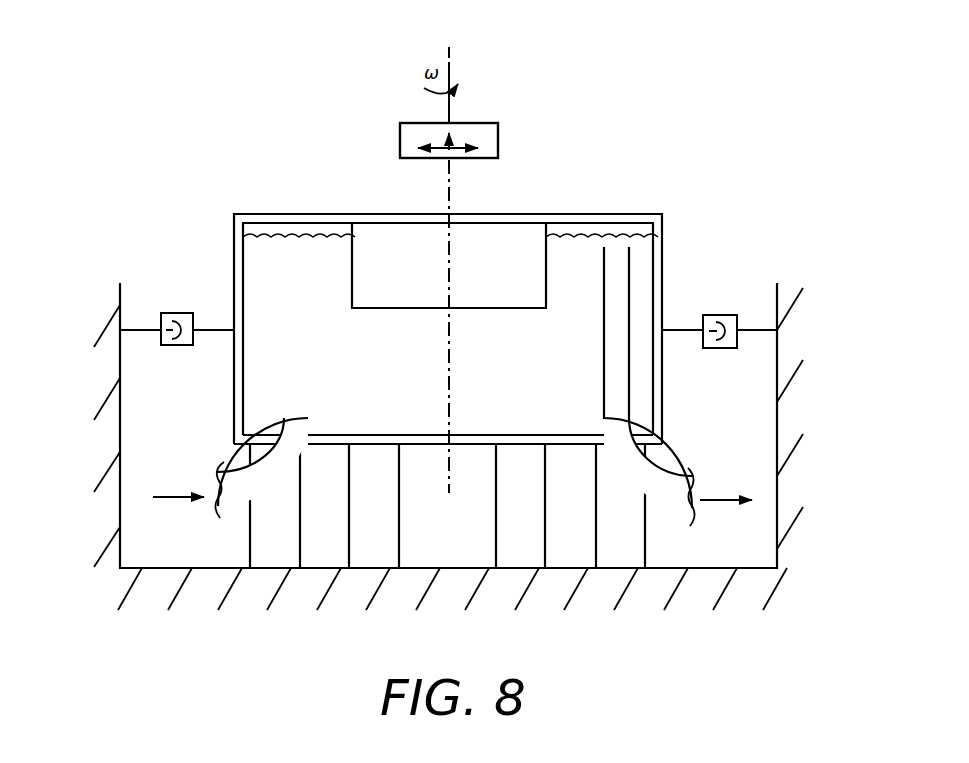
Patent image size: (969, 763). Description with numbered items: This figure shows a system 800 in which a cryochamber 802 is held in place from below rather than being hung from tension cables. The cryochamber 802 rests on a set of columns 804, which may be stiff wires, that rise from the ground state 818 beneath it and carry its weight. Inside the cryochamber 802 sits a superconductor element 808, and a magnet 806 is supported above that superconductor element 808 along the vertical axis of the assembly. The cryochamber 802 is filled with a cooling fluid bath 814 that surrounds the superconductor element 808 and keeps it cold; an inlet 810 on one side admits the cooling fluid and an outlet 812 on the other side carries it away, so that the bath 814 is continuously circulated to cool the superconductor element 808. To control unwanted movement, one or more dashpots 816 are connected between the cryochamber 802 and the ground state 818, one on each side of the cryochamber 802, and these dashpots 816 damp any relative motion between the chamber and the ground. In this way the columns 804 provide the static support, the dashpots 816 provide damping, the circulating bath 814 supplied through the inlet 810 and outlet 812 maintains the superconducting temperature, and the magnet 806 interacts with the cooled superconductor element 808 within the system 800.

The system 800 is at (664, 126).
The cryochamber 802 is at (283, 214).
The columns 804 is at (668, 548).
The magnet 806 is at (400, 158).
The superconductor element 808 is at (505, 233).
The inlet 810 is at (234, 462).
The outlet 812 is at (632, 354).
The cooling fluid bath 814 is at (252, 397).
The dashpots 816 is at (163, 313).
The ground state 818 is at (317, 568).